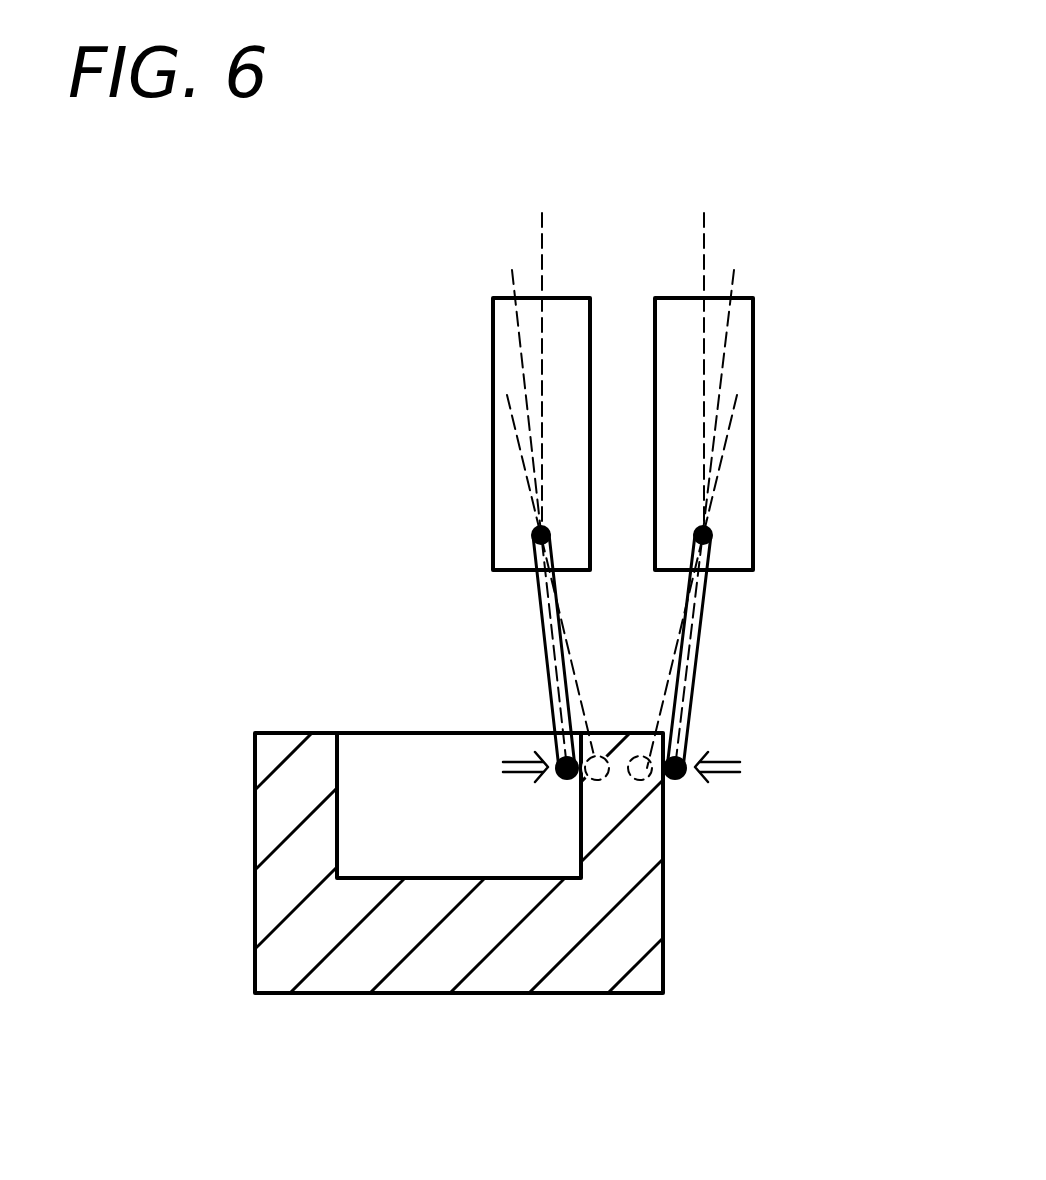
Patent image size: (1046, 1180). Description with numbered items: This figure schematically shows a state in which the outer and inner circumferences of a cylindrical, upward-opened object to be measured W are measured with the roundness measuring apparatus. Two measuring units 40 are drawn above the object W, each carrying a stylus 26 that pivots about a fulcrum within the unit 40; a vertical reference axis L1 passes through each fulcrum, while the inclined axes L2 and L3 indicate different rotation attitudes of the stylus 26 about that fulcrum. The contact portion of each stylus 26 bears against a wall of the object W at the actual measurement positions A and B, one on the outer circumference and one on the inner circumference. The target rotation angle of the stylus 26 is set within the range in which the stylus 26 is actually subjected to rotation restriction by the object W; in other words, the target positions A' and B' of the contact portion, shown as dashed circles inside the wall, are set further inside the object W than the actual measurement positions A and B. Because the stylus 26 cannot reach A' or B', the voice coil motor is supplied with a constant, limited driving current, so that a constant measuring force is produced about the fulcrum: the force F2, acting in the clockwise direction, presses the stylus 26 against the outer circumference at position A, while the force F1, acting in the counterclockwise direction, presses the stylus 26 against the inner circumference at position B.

The object to be measured W is at (255, 885).
The robot arm / actuator 40 is at (493, 517).
The stylus 26 is at (549, 660).
The vertical reference axis L1 is at (626, 346).
The rod axis at gripping position L2 is at (626, 491).
The rod axis at released position L3 is at (510, 423).
The actual measurement position A is at (712, 814).
The actual measurement position B is at (547, 817).
The target position A' is at (687, 860).
The target position B' is at (625, 912).
The constant measuring force F1 is at (505, 760).
The constant measuring force F2 is at (747, 757).